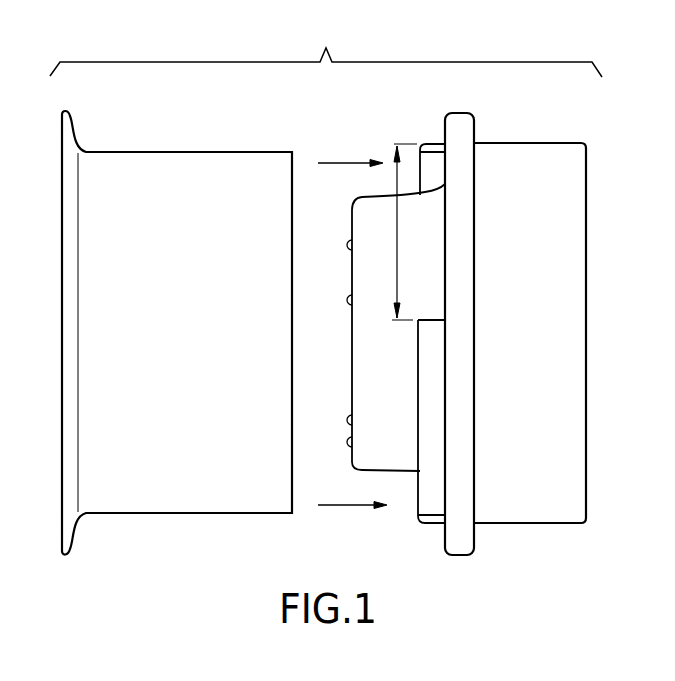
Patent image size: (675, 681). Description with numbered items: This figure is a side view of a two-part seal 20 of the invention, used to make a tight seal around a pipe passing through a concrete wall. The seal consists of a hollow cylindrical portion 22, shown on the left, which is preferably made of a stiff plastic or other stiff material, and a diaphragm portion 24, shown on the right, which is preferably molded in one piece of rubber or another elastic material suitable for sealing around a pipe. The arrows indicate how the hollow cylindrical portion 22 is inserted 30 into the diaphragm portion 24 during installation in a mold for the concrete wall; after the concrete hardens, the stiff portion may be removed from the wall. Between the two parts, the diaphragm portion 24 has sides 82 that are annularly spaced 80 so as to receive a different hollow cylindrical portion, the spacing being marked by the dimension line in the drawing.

The two-part seal 20 is at (326, 50).
The hollow cylindrical portion 22 is at (210, 152).
The diaphragm portion 24 is at (535, 143).
The insertion 30 is at (343, 161).
The annular spacing 80 is at (397, 233).
The sides 82 is at (432, 318).